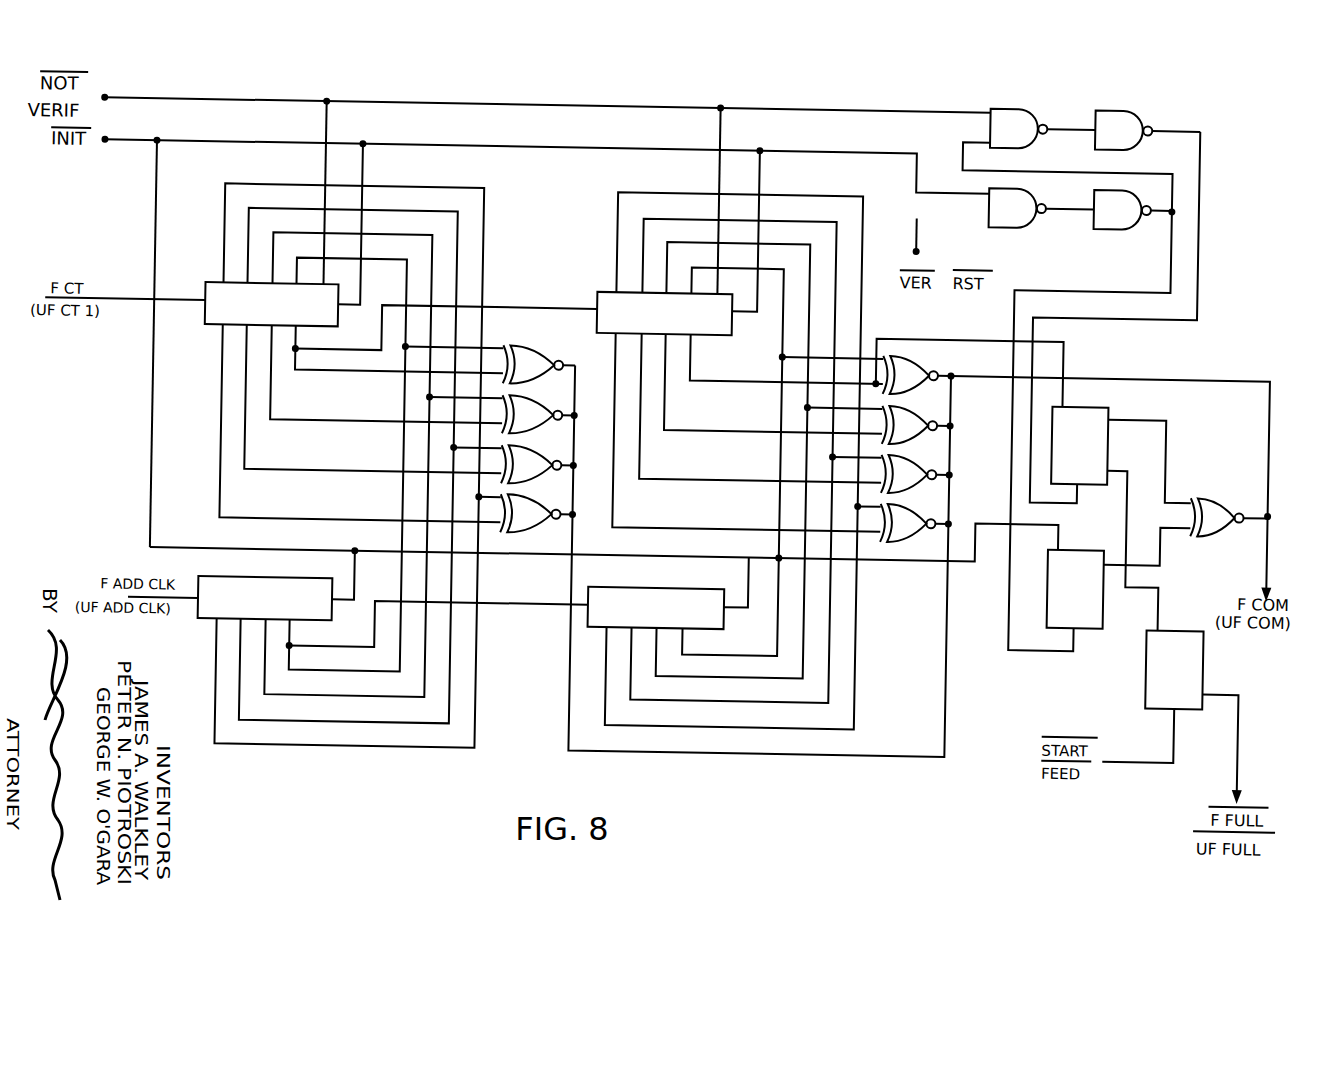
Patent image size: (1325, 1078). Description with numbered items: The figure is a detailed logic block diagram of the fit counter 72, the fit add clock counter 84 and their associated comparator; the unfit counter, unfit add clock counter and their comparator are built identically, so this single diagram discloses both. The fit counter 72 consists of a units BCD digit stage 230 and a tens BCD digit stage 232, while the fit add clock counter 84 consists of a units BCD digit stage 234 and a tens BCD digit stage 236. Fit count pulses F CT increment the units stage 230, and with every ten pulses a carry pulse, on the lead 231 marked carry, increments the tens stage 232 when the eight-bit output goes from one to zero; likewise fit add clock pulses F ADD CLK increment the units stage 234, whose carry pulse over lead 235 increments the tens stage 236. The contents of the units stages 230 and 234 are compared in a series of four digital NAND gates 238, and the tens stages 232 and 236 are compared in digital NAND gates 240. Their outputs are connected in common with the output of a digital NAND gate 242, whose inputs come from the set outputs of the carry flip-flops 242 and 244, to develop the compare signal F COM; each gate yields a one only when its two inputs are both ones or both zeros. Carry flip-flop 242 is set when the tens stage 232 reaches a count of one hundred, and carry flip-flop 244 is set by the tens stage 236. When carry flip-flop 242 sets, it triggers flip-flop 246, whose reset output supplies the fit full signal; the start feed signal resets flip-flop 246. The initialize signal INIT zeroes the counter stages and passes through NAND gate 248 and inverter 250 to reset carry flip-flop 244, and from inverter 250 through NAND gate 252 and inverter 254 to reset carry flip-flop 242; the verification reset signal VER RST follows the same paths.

The fit counter 72 is at (440, 322).
The fit add clock counter 84 is at (452, 629).
The units BCD digit stage 230 is at (323, 327).
The carry line 231 is at (494, 306).
The tens BCD digit stage 232 is at (716, 335).
The units BCD digit stage 234 is at (321, 627).
The lead 235 is at (508, 608).
The tens BCD digit stage 236 is at (713, 628).
The digital NAND gates 238 is at (558, 336).
The digital NAND gates 240 is at (920, 541).
The carry flip-flop 242 is at (1090, 400).
The carry flip-flop 244 is at (1077, 543).
The flip-flop 246 is at (1150, 689).
The NAND gate 248 is at (1012, 220).
The inverter 250 is at (1101, 184).
The NAND gate 252 is at (1014, 104).
The inverter 254 is at (1124, 108).